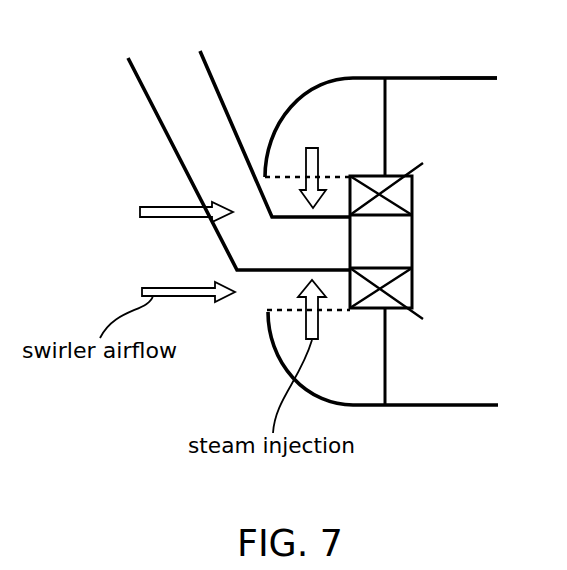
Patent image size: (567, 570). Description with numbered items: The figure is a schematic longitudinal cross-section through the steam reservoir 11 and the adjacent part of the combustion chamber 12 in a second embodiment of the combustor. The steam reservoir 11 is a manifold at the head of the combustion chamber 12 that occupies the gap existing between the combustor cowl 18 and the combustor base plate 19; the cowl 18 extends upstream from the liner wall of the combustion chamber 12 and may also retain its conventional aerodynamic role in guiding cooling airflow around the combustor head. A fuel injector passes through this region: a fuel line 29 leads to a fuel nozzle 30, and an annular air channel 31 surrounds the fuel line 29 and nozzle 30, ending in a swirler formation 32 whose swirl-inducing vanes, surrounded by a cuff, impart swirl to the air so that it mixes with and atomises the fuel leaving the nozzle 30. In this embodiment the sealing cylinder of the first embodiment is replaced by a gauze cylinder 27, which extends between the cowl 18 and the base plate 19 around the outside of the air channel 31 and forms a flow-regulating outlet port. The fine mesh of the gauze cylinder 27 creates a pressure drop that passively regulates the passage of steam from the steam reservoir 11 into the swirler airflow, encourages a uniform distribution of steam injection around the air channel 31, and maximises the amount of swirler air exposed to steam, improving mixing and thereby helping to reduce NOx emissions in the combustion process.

The steam reservoir 11 is at (325, 107).
The combustion chamber 12 is at (457, 92).
The combustor cowl 18 is at (356, 78).
The combustor base plate 19 is at (387, 378).
The gauze cylinder 27 is at (281, 313).
The fuel line 29 is at (164, 132).
The fuel nozzle 30 is at (412, 235).
The annular air channel 31 is at (287, 192).
The swirler formation 32 is at (393, 288).